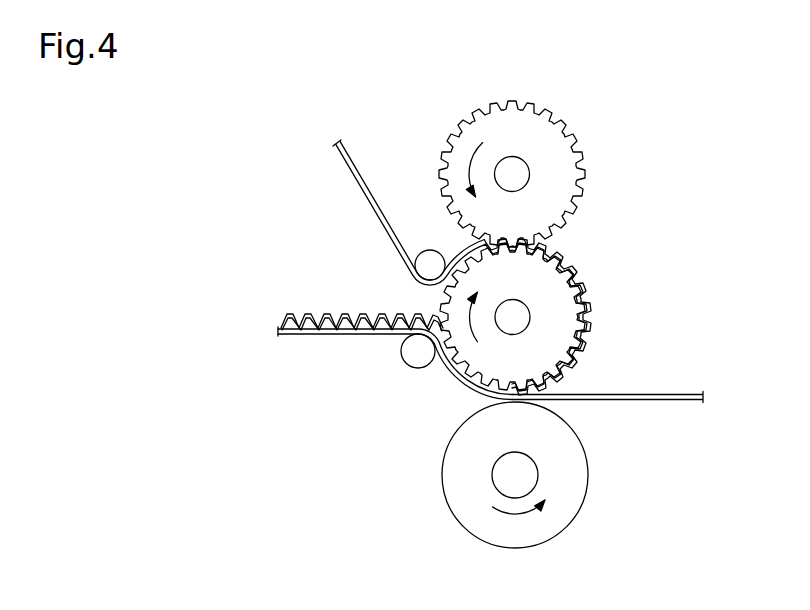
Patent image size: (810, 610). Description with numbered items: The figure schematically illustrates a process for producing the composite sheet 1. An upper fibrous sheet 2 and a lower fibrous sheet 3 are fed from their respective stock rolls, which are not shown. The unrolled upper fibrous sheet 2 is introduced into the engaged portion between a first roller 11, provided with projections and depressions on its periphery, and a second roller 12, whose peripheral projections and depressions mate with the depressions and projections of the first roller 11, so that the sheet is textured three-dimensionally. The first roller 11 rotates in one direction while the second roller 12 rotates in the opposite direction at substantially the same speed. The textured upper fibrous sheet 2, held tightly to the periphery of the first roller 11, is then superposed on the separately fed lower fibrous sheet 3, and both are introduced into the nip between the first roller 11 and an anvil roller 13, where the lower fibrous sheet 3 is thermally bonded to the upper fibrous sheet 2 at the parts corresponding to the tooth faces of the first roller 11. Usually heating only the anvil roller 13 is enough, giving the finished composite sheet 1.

The composite sheet 1 is at (305, 310).
The upper fibrous sheet 2 is at (348, 153).
The lower fibrous sheet 3 is at (660, 392).
The first roller 11 is at (553, 292).
The second roller 12 is at (555, 143).
The anvil roller 13 is at (568, 482).